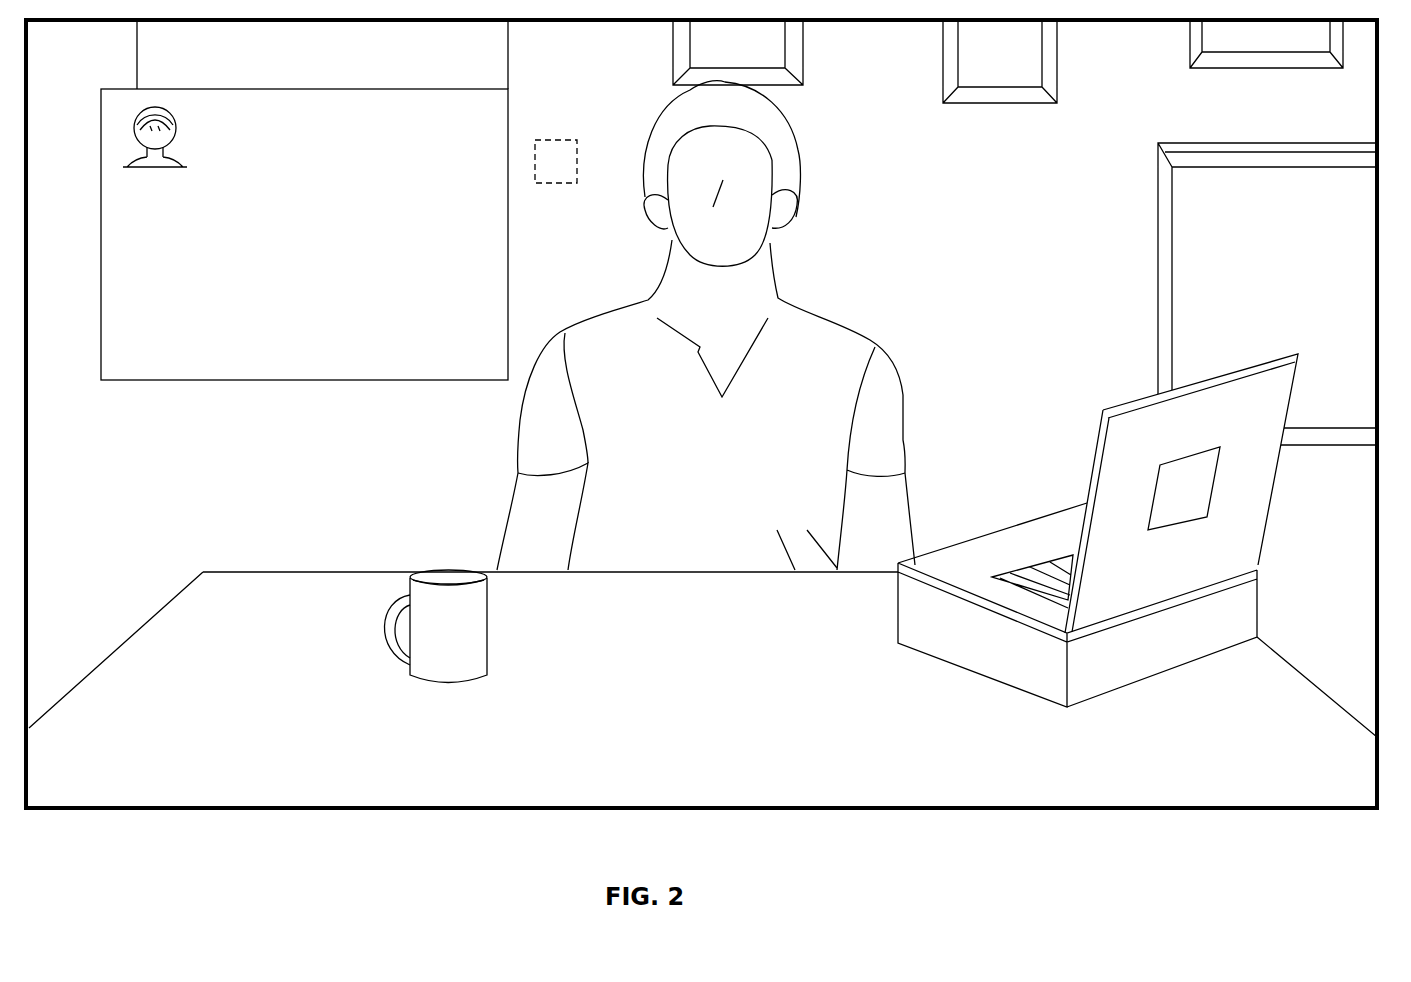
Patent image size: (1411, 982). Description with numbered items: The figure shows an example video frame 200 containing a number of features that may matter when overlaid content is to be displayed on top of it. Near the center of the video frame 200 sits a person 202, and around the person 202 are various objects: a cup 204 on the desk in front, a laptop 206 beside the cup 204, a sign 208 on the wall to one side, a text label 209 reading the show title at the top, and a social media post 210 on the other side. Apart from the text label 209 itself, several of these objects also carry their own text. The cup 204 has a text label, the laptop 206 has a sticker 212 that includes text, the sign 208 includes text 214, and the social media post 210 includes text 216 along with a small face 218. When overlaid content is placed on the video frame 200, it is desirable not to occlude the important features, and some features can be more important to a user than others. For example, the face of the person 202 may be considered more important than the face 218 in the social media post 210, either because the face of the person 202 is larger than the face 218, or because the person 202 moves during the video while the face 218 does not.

The video frame 200 is at (757, 904).
The person 202 is at (795, 163).
The cup 204 is at (477, 637).
The laptop 206 is at (1098, 530).
The sign 208 is at (1284, 277).
The text label 209 is at (465, 60).
The social media post 210 is at (304, 261).
The sticker 212 is at (1175, 522).
The text 214 is at (1300, 228).
The text 216 is at (398, 183).
The face 218 is at (178, 138).